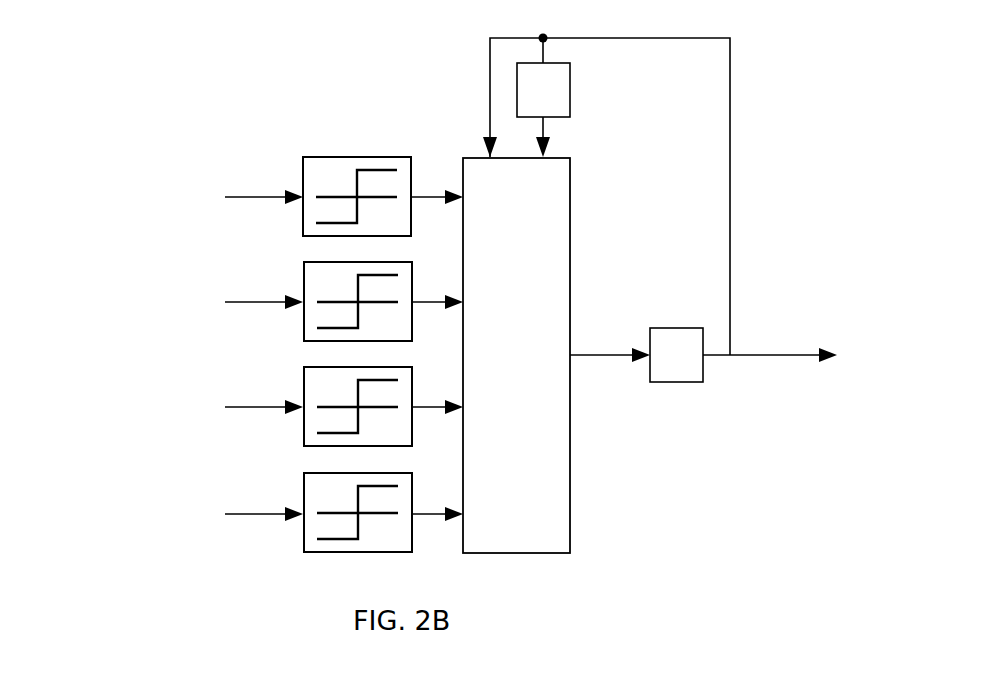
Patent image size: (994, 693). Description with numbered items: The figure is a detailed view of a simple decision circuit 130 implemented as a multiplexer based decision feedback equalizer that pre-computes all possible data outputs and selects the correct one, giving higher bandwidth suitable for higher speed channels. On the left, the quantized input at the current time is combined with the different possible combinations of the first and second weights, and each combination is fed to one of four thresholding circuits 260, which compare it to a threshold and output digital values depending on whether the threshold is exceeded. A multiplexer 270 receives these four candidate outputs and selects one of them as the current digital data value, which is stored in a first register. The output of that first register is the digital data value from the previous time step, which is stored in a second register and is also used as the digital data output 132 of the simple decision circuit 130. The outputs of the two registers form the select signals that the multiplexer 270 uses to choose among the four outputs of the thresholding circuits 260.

The simple decision circuit 130 is at (137, 81).
The thresholding circuits 260 is at (365, 126).
The multiplexer 270 is at (578, 500).
The digital data output 132 is at (760, 370).